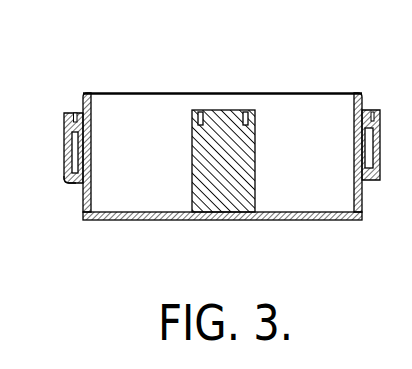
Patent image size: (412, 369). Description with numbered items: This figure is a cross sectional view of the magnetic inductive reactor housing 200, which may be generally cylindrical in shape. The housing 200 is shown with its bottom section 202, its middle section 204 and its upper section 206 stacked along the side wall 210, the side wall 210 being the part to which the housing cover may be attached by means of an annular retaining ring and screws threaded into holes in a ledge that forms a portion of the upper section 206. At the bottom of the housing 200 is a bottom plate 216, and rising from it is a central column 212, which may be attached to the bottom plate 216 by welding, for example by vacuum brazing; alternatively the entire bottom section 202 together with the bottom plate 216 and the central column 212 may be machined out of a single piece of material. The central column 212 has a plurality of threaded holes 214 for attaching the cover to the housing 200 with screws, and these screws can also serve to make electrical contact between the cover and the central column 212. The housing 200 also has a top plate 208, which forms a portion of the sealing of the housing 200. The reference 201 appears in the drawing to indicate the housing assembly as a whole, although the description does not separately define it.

The magnetic inductive reactor housing 200 is at (185, 141).
The terminal block 201 is at (83, 116).
The bottom section 202 is at (83, 201).
The middle section 204 is at (66, 166).
The upper section 206 is at (78, 92).
The top plate 208 is at (280, 92).
The side wall 210 is at (91, 148).
The central column 212 is at (196, 111).
The threaded holes 214 is at (245, 112).
The bottom plate 216 is at (324, 221).